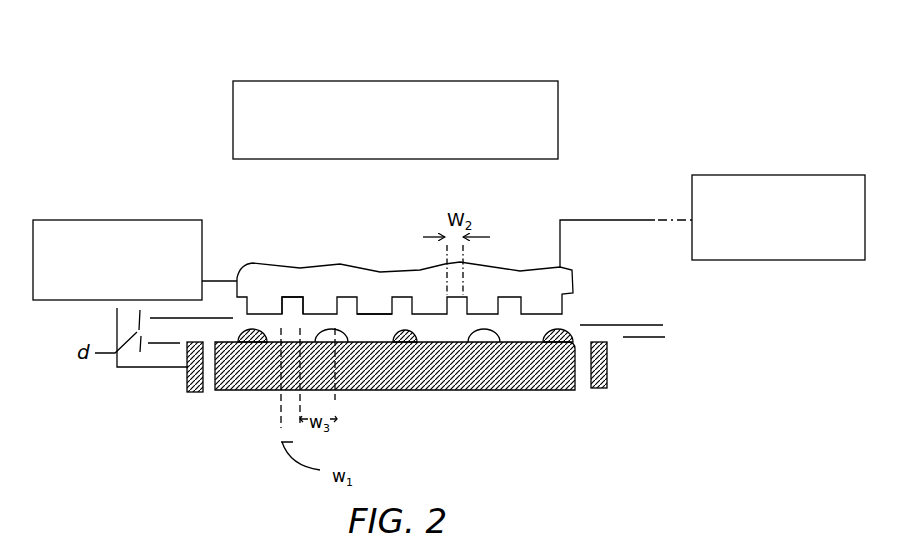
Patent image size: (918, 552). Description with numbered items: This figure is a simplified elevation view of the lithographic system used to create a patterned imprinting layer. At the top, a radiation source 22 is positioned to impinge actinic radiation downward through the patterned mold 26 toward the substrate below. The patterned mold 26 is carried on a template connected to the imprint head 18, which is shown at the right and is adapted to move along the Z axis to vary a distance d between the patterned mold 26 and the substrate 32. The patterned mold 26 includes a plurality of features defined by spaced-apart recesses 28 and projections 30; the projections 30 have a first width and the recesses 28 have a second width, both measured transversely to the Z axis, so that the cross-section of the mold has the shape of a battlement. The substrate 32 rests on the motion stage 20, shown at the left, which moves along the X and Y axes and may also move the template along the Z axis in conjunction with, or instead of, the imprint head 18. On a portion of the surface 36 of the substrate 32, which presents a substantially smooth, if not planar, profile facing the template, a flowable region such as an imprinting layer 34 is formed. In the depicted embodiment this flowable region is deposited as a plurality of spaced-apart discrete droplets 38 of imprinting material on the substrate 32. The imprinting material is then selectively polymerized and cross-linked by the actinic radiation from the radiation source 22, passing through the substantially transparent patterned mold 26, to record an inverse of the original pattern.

The imprint head 18 is at (787, 175).
The motion stage 20 is at (130, 218).
The radiation source 22 is at (472, 81).
The patterned mold 26 is at (558, 283).
The recesses 28 is at (322, 264).
The projections 30 is at (427, 315).
The substrate 32 is at (617, 343).
The imprinting layer 34 is at (670, 328).
The surface 36 is at (517, 338).
The droplets 38 is at (483, 330).